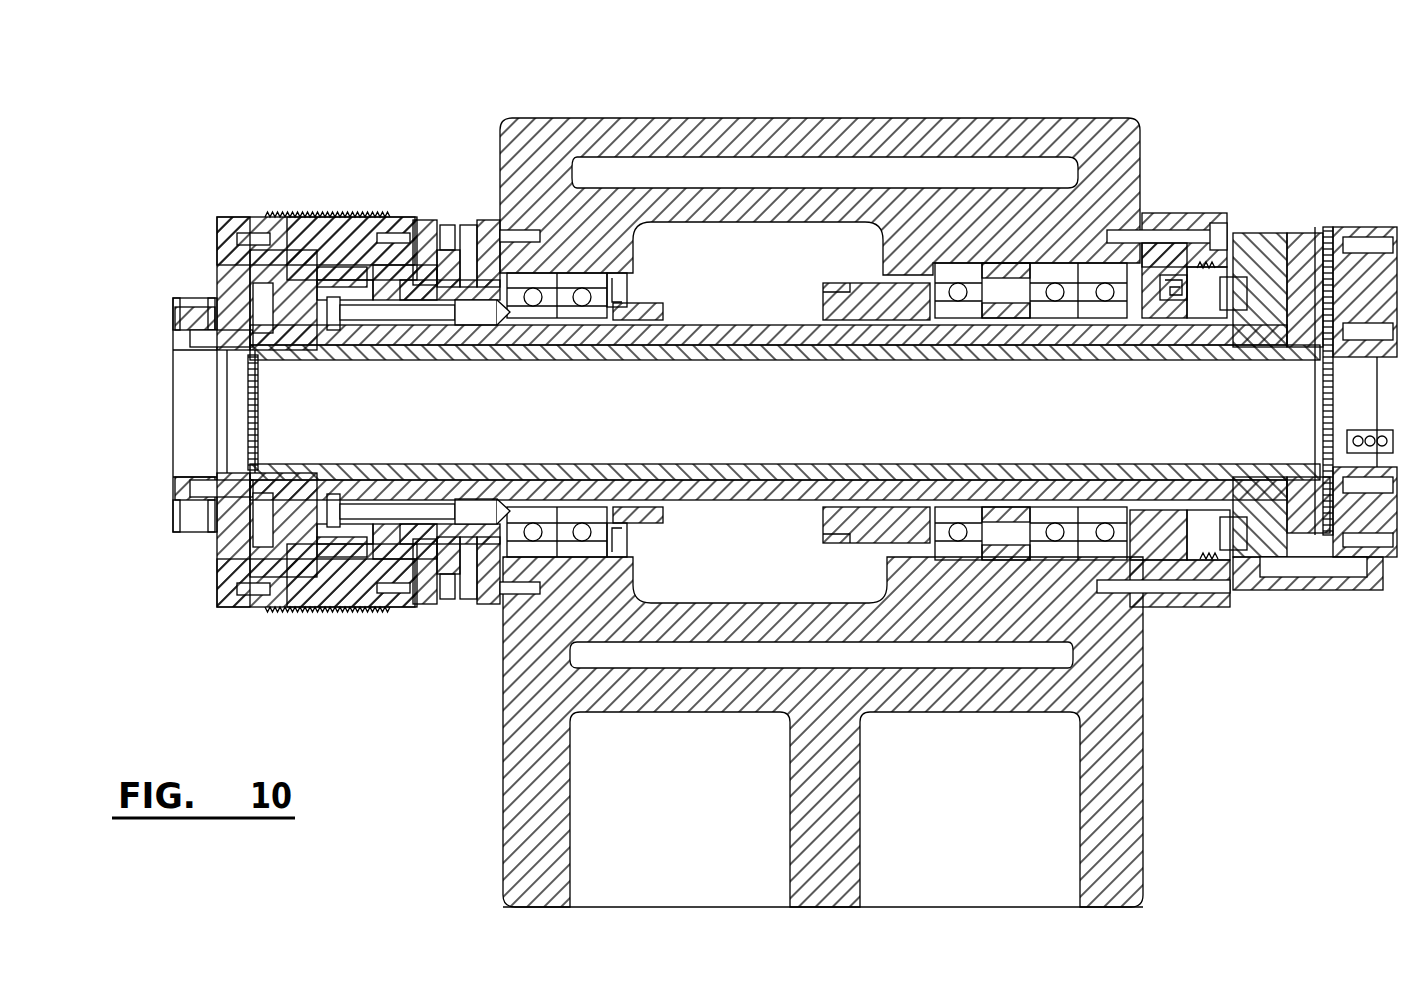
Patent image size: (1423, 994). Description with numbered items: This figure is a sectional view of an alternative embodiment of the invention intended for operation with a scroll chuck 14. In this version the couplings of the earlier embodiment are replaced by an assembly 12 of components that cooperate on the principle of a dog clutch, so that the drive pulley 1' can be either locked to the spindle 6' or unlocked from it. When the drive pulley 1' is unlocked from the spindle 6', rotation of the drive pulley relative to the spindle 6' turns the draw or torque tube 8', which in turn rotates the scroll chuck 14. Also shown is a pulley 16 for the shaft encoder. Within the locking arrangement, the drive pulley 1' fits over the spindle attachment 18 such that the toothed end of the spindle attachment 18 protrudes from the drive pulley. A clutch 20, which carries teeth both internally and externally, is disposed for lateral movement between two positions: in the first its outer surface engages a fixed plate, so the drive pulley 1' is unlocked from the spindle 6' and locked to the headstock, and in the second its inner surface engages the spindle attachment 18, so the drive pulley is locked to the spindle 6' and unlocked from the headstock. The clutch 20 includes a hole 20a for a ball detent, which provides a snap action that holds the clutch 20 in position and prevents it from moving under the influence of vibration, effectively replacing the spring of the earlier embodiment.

The drive pulley 1' is at (358, 341).
The spindle 6' is at (768, 412).
The draw or torque tube 8' is at (785, 412).
The assembly 12 is at (447, 186).
The scroll chuck 14 is at (1363, 227).
The pulley 16 is at (188, 300).
The spindle attachment 18 is at (337, 360).
The clutch 20 is at (445, 220).
The hole 20a is at (464, 220).